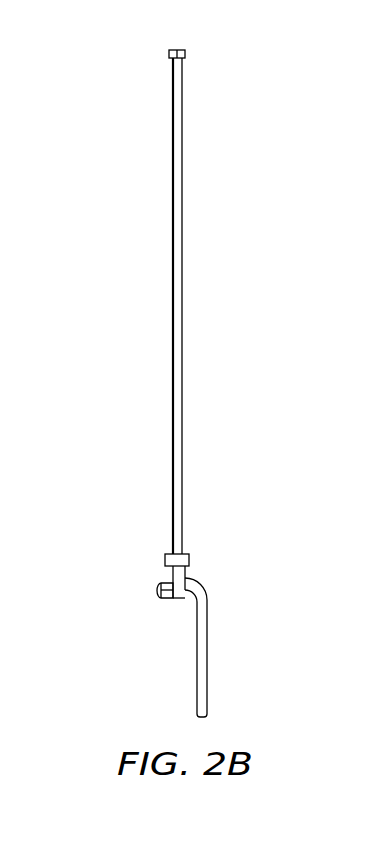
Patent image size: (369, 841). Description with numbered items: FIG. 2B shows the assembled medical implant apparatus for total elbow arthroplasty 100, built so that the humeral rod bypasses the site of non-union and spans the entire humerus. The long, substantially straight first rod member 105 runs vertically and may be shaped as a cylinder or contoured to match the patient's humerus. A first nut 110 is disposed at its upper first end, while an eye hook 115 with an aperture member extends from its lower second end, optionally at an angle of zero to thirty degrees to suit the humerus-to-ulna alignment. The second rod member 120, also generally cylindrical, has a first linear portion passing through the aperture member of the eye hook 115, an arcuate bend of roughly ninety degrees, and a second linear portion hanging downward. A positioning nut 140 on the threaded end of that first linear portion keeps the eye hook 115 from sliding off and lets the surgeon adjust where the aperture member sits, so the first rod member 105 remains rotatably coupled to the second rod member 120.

The medical implant apparatus for total elbow arthroplasty 100 is at (340, 58).
The first rod member 105 is at (173, 118).
The first nut 110 is at (169, 52).
The eye hook 115 is at (165, 562).
The second rod member 120 is at (208, 639).
The positioning nut 140 is at (165, 600).